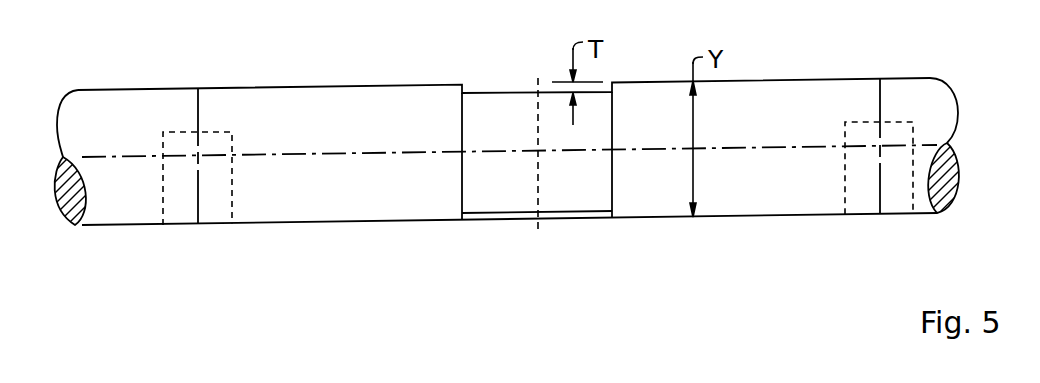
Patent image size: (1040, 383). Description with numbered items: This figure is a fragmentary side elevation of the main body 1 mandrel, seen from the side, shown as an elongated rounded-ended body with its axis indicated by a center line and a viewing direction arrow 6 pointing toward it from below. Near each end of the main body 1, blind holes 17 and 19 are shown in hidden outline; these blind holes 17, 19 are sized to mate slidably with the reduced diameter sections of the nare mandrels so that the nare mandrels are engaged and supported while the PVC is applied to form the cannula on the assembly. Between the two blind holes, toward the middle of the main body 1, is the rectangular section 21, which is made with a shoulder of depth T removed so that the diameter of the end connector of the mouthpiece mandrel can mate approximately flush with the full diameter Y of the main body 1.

The main body 1 is at (785, 107).
The rectangular section 21 is at (502, 120).
The blind hole 19 is at (233, 202).
The blind hole 17 is at (845, 200).
The axis / center plane 6 is at (538, 238).